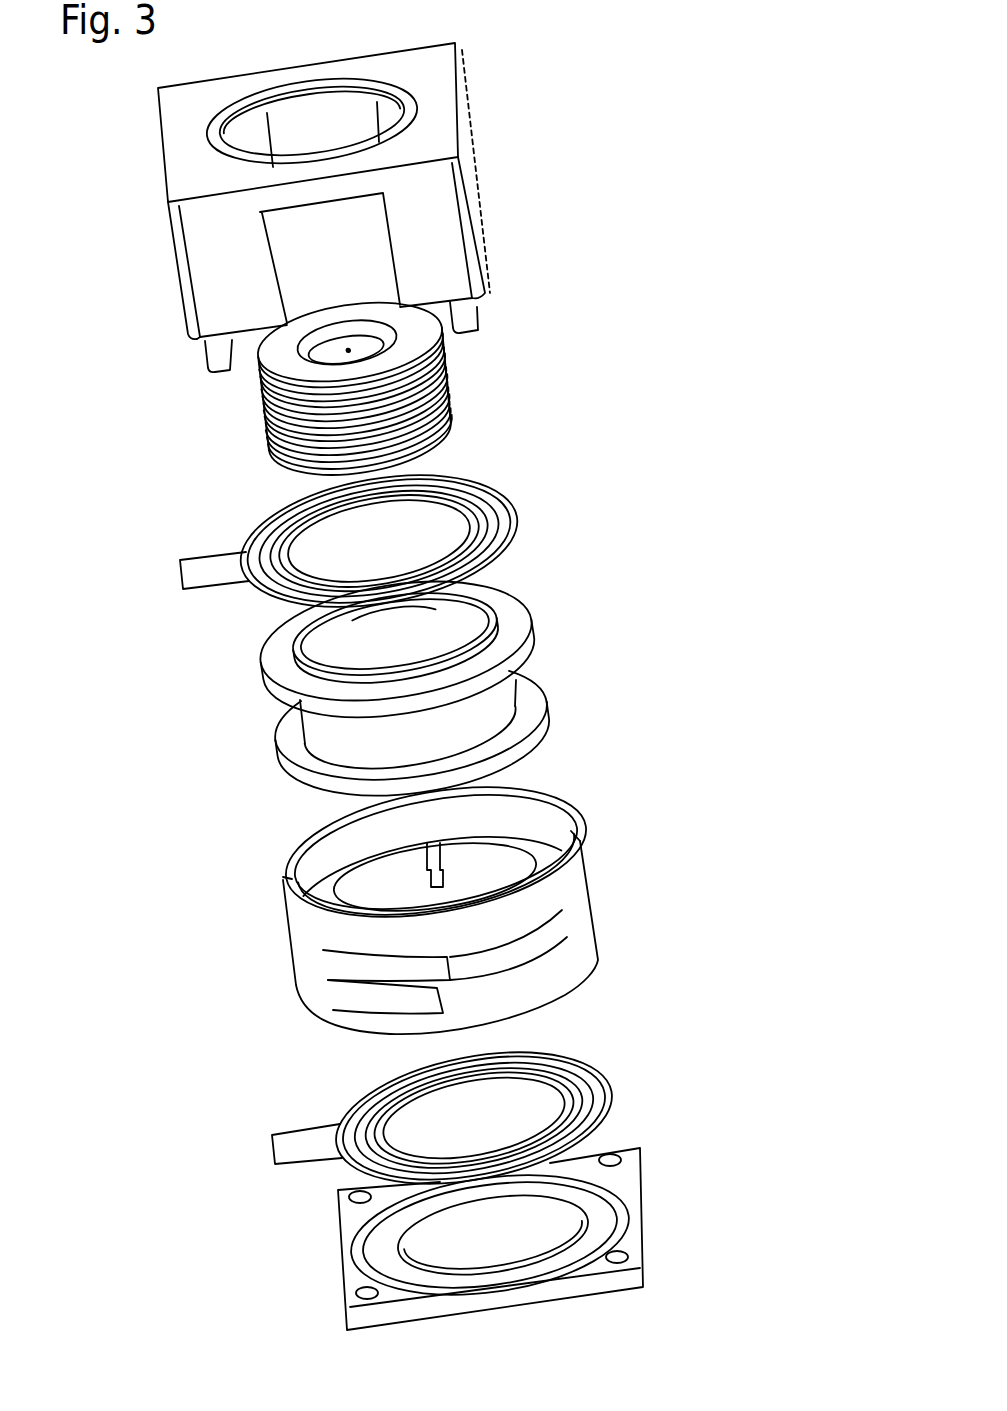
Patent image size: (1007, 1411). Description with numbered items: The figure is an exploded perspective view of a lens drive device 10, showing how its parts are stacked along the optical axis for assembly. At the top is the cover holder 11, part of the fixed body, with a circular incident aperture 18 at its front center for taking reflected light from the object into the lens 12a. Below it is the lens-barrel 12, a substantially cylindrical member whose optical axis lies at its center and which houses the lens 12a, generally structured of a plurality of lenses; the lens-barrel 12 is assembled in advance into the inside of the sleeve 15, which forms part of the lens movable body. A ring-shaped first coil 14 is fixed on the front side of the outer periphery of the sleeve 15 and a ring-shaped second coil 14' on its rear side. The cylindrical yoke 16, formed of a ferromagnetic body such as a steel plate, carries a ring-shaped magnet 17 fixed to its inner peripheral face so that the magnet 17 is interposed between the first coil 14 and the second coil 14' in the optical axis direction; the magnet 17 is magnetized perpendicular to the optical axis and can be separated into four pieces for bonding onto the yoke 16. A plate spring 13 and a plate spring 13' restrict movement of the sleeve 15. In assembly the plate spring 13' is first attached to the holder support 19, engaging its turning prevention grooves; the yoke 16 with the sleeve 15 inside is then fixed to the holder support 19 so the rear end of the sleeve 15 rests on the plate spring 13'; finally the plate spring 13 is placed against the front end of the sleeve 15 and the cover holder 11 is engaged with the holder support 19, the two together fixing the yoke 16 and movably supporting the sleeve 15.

The lens drive device 10 is at (506, 51).
The cover holder 11 is at (452, 275).
The lens-barrel 12 is at (447, 390).
The lens 12a is at (365, 345).
The plate spring 13 is at (407, 541).
The plate spring 13' is at (501, 1117).
The first coil 14 is at (446, 649).
The second coil 14' is at (453, 738).
The sleeve 15 is at (482, 700).
The yoke 16 is at (570, 918).
The magnet 17 is at (537, 852).
The incident aperture 18 is at (322, 123).
The holder support 19 is at (623, 1168).